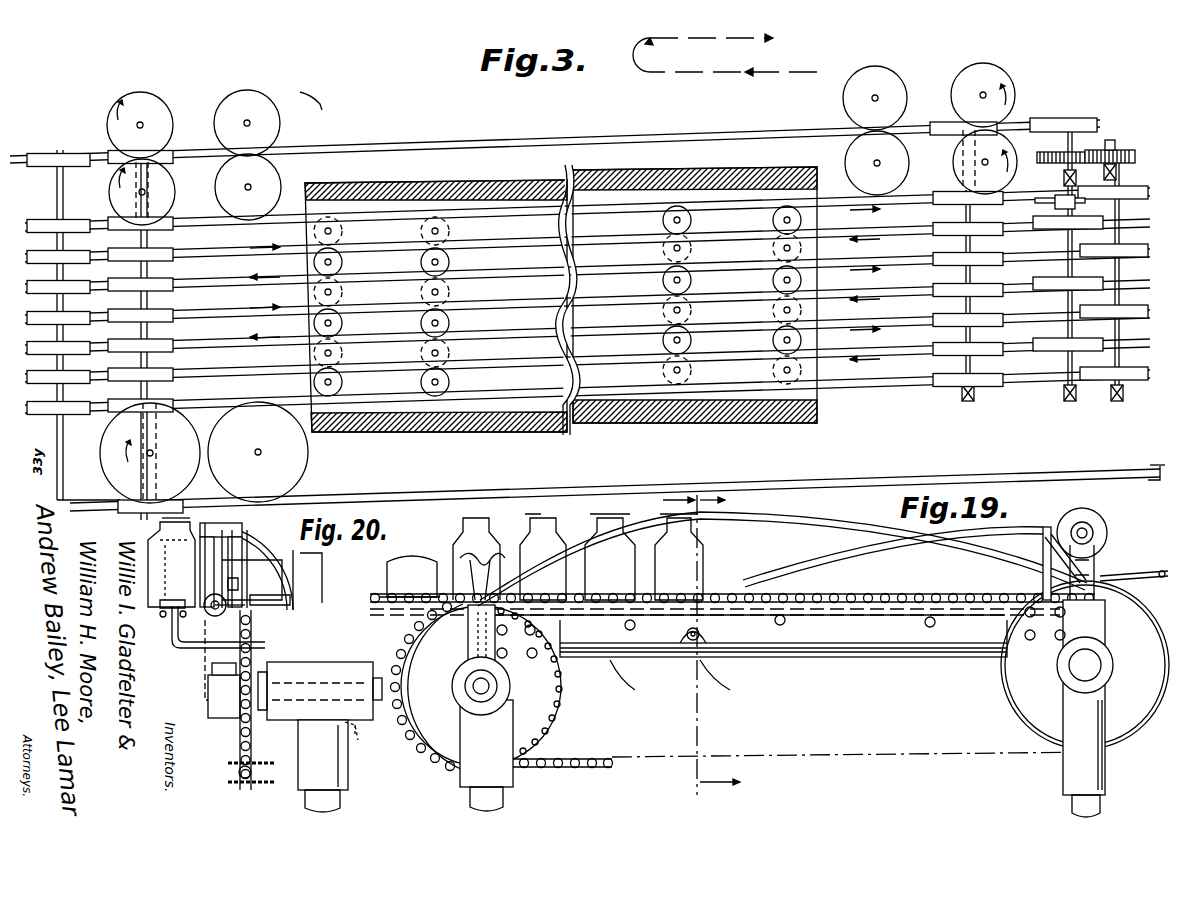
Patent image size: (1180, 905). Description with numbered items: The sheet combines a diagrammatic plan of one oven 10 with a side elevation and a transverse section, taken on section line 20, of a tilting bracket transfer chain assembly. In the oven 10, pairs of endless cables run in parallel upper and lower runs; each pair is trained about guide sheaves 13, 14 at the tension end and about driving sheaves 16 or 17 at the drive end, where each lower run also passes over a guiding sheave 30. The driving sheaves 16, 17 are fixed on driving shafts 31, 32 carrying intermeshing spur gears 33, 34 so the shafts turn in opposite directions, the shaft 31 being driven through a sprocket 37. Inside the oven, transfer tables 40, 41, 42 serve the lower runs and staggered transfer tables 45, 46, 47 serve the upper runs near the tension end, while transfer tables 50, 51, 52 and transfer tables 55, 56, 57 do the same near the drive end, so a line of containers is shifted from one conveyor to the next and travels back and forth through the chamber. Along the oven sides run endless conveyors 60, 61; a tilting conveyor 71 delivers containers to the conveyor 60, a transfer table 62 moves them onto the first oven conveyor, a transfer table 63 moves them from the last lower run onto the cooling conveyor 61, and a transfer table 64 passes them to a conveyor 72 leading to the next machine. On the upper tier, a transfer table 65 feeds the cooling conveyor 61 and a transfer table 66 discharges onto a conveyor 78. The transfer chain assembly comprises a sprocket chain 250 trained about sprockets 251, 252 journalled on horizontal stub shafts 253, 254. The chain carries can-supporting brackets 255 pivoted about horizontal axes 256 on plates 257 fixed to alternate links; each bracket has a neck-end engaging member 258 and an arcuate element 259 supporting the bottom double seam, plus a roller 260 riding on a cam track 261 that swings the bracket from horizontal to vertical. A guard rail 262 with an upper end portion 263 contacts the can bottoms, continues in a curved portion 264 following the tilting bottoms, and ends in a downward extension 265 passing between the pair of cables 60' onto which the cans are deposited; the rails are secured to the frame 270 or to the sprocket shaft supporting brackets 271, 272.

In FIG. 3, the oven 10 is at (562, 168).
In FIG. 3, the guide sheave 13 is at (30, 250).
In FIG. 3, the guide sheave 14 is at (165, 259).
In FIG. 3, the driving sheave 16 is at (1105, 214).
In FIG. 3, the driving sheave 17 is at (1130, 248).
In FIG. 19, the section line 20 is at (687, 644).
In FIG. 3, the guiding sheave 30 is at (945, 280).
In FIG. 3, the driving shaft 31 is at (1068, 360).
In FIG. 3, the driving shaft 32 is at (1120, 350).
In FIG. 3, the spur gear 33 is at (1078, 152).
In FIG. 3, the spur gear 34 is at (1118, 150).
In FIG. 3, the sprocket 37 is at (1045, 204).
In FIG. 3, the transfer table 40 is at (425, 353).
In FIG. 3, the transfer table 41 is at (425, 292).
In FIG. 3, the transfer table 42 is at (425, 231).
In FIG. 3, the transfer table 45 is at (422, 382).
In FIG. 3, the transfer table 46 is at (422, 323).
In FIG. 3, the transfer table 47 is at (422, 262).
In FIG. 3, the transfer table 50 is at (773, 370).
In FIG. 3, the transfer table 51 is at (773, 310).
In FIG. 3, the transfer table 52 is at (773, 248).
In FIG. 3, the transfer table 55 is at (773, 340).
In FIG. 3, the transfer table 56 is at (773, 280).
In FIG. 3, the transfer table 57 is at (773, 220).
In FIG. 3, the endless conveyor 60 is at (615, 484).
In FIG. 19, the pair of cables 60' is at (773, 585).
In FIG. 20, the pair of cables 60' is at (165, 617).
In FIG. 3, the cooling conveyor 61 is at (330, 147).
In FIG. 3, the transfer table 62 is at (232, 466).
In FIG. 3, the transfer table 63 is at (960, 172).
In FIG. 3, the transfer table 64 is at (222, 125).
In FIG. 3, the transfer table 65 is at (230, 195).
In FIG. 3, the transfer table 66 is at (957, 96).
In FIG. 3, the tilting conveyor 71 is at (1152, 472).
In FIG. 3, the conveyor 72 is at (313, 107).
In FIG. 3, the conveyor 78 is at (770, 70).
In FIG. 19, the sprocket chain 250 is at (575, 760).
In FIG. 20, the sprocket chain 250 is at (252, 778).
In FIG. 19, the sprocket 251 is at (1003, 698).
In FIG. 20, the sprocket 251 is at (238, 745).
In FIG. 19, the sprocket 252 is at (568, 694).
In FIG. 19, the stub shaft 253 is at (1070, 667).
In FIG. 20, the stub shaft 253 is at (353, 745).
In FIG. 19, the stub shaft 254 is at (484, 686).
In FIG. 19, the can-supporting bracket 255 is at (455, 590).
In FIG. 20, the horizontal axis 256 is at (215, 622).
In FIG. 20, the plate 257 is at (300, 600).
In FIG. 19, the neck-end engaging member 258 is at (468, 555).
In FIG. 20, the neck-end engaging member 258 is at (293, 580).
In FIG. 19, the arcuate element 259 is at (486, 540).
In FIG. 20, the arcuate element 259 is at (218, 595).
In FIG. 19, the roller 260 is at (640, 515).
In FIG. 20, the roller 260 is at (212, 524).
In FIG. 19, the cam track 261 is at (808, 522).
In FIG. 20, the cam track 261 is at (310, 562).
In FIG. 19, the guard rail 262 is at (1038, 548).
In FIG. 20, the guard rail 262 is at (215, 660).
In FIG. 19, the upper end portion 263 is at (1043, 528).
In FIG. 20, the upper end portion 263 is at (220, 545).
In FIG. 19, the curved portion 264 is at (875, 560).
In FIG. 20, the curved portion 264 is at (171, 562).
In FIG. 19, the downward extension 265 is at (730, 665).
In FIG. 20, the downward extension 265 is at (170, 648).
In FIG. 19, the frame 270 is at (830, 650).
In FIG. 19, the sprocket shaft supporting bracket 271 is at (1105, 667).
In FIG. 20, the sprocket shaft supporting bracket 271 is at (345, 662).
In FIG. 19, the sprocket shaft supporting bracket 272 is at (455, 675).